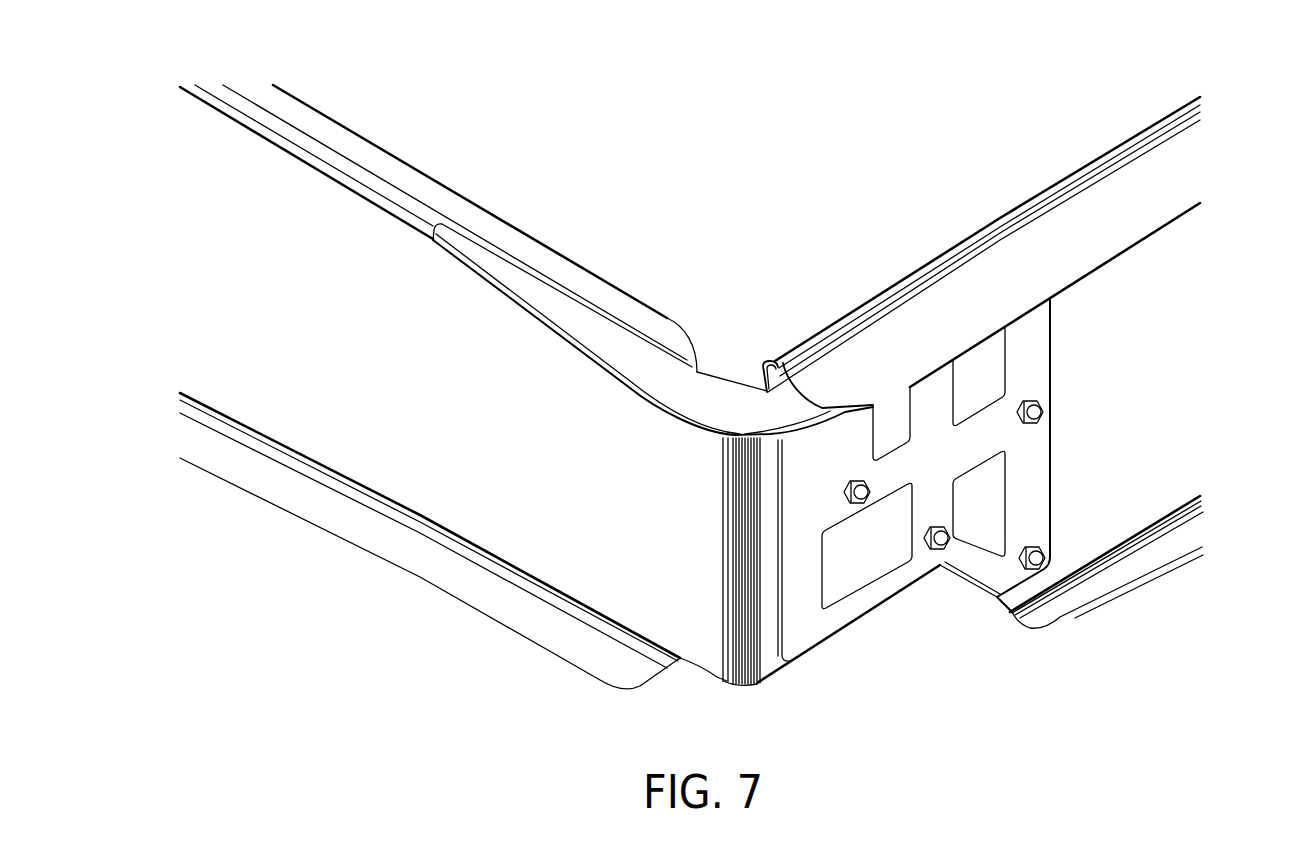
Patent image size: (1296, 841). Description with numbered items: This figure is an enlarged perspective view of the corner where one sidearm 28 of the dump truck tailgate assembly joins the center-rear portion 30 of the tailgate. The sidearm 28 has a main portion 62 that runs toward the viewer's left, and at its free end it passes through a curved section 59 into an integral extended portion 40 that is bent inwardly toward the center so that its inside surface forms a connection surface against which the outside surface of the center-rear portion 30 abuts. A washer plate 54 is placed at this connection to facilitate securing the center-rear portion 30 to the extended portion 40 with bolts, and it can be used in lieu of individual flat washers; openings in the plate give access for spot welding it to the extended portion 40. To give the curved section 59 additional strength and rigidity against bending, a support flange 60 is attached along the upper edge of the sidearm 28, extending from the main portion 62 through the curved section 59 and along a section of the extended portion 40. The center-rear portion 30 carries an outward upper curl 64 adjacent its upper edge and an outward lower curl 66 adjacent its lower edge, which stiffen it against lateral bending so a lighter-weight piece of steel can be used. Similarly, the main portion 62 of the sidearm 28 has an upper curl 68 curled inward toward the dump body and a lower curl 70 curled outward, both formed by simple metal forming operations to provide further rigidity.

The sidearm 28 is at (325, 407).
The center-rear portion 30 is at (1097, 347).
The extended portion 40 is at (768, 628).
The washer plate 54 is at (913, 562).
The curved section 59 is at (735, 627).
The support flange 60 is at (710, 397).
The main portion 62 is at (605, 577).
The upper curl 64 is at (993, 283).
The lower curl 66 is at (1077, 602).
The upper sidearm curl 68 is at (362, 143).
The lower sidearm curl 70 is at (400, 550).